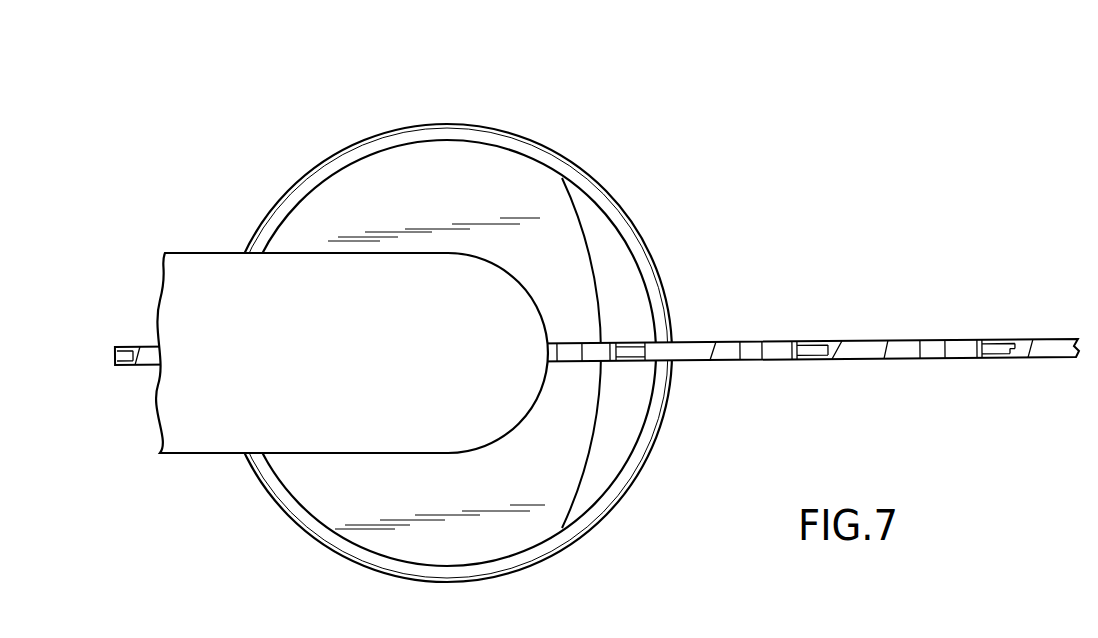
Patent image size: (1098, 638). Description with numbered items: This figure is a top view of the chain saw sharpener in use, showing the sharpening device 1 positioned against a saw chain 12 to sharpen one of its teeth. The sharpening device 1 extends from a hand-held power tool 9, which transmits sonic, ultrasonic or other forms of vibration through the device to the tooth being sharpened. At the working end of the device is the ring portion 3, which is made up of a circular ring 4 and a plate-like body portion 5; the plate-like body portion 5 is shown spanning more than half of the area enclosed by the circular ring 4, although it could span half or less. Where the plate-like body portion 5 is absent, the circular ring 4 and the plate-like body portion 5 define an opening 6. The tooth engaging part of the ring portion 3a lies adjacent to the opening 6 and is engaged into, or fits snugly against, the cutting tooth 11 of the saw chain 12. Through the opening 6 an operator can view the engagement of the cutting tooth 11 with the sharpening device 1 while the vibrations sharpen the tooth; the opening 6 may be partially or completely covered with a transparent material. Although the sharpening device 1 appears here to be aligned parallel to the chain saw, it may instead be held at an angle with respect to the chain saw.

The sharpening device 1 is at (478, 301).
The ring portion 3 is at (481, 301).
The tooth engaging part of the ring portion 3a is at (650, 250).
The circular ring 4 is at (541, 137).
The plate-like body portion 5 is at (495, 178).
The opening 6 is at (577, 240).
The hand-held power tool 9 is at (150, 423).
The cutting tooth 11 is at (603, 292).
The saw chain 12 is at (1017, 318).